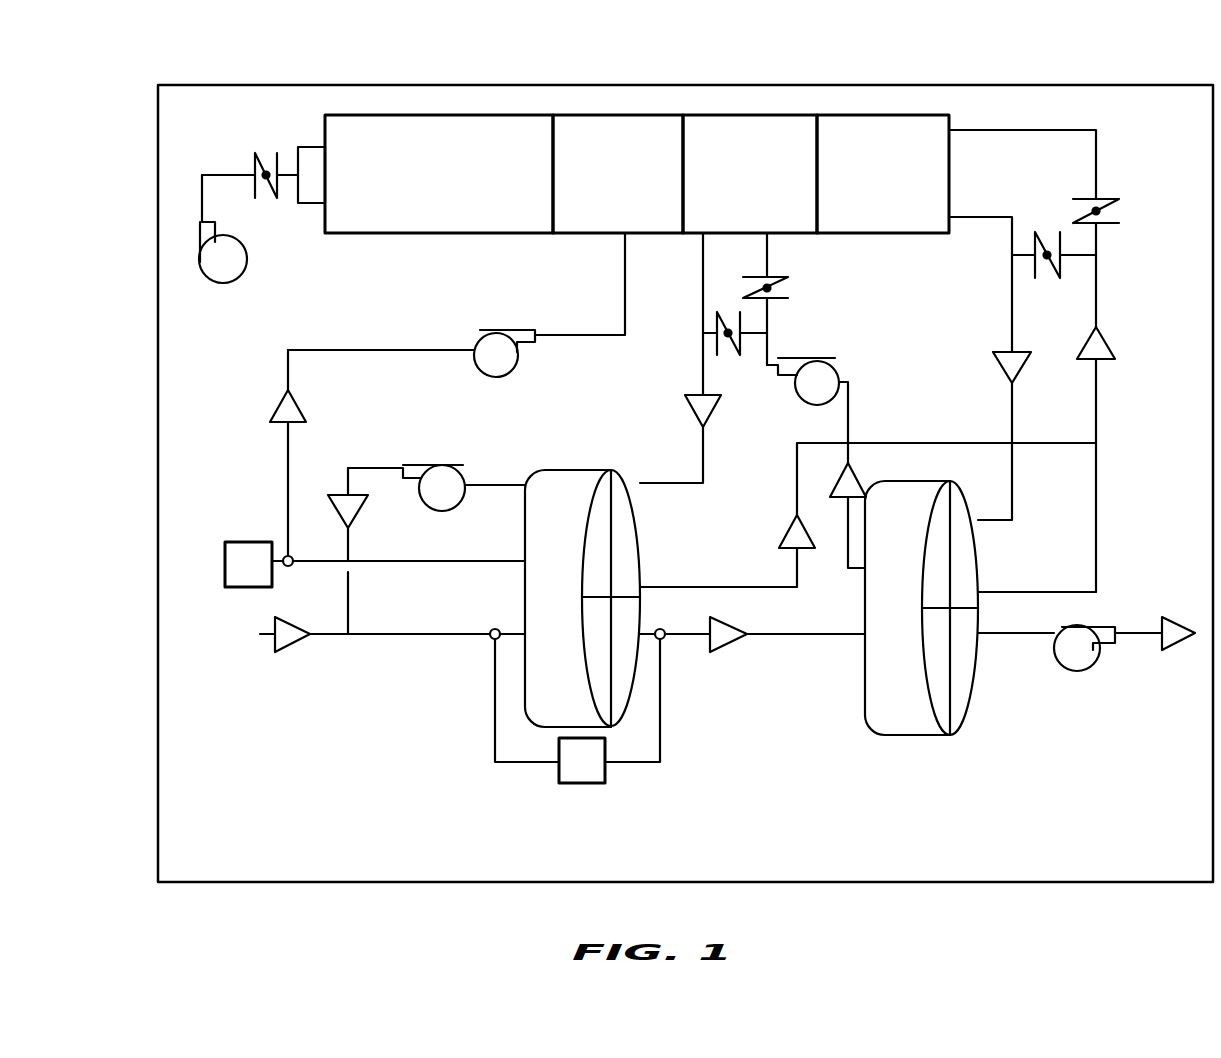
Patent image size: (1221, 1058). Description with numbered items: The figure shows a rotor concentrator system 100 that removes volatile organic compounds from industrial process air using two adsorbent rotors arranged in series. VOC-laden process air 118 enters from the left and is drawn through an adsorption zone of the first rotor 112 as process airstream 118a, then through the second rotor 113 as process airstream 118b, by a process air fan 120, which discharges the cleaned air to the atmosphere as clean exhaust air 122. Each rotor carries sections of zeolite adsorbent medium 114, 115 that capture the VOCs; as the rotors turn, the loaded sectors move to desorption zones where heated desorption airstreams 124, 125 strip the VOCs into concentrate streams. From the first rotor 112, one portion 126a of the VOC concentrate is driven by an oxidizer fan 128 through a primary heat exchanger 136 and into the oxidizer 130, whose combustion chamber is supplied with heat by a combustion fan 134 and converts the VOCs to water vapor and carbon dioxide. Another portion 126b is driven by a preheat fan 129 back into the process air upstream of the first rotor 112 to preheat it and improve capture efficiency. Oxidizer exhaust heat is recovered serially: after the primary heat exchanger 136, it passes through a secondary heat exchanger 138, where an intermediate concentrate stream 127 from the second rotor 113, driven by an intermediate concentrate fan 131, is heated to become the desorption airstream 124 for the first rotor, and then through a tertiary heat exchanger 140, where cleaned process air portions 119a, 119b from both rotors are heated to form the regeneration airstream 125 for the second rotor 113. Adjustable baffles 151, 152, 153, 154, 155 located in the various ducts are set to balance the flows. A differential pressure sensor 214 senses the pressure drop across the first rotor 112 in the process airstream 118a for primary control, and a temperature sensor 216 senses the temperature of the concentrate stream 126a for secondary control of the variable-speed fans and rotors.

The rotor concentrator system 100 is at (330, 716).
The first rotor 112 is at (638, 518).
The second rotor 113 is at (982, 565).
The adsorbent medium section 114 is at (627, 565).
The adsorbent medium section 115 is at (968, 680).
The process air 118 is at (320, 628).
The process airstream 118a is at (383, 628).
The process airstream 118b is at (818, 628).
The cleaned process air portion 119a is at (733, 584).
The cleaned process air portion 119b is at (1046, 588).
The process air fan 120 is at (1076, 672).
The clean exhaust air 122 is at (1144, 640).
The desorption airstream 124 is at (710, 478).
The desorption airstream 125 is at (1014, 412).
The VOC concentrate airstream portion 126a is at (420, 557).
The VOC concentrate airstream portion 126b is at (510, 481).
The intermediate concentrate stream 127 is at (852, 420).
The oxidizer fan 128 is at (518, 364).
The preheat fan 129 is at (456, 472).
The oxidizer 130 is at (408, 115).
The intermediate concentrate fan 131 is at (800, 402).
The combustion fan 134 is at (222, 284).
The primary heat exchanger 136 is at (605, 115).
The secondary heat exchanger 138 is at (730, 115).
The tertiary heat exchanger 140 is at (868, 115).
The baffle 151 is at (255, 165).
The baffle 152 is at (736, 350).
The baffle 153 is at (784, 280).
The baffle 154 is at (1105, 212).
The baffle 155 is at (1052, 270).
The differential pressure sensor 214 is at (608, 770).
The temperature sensor 216 is at (250, 540).